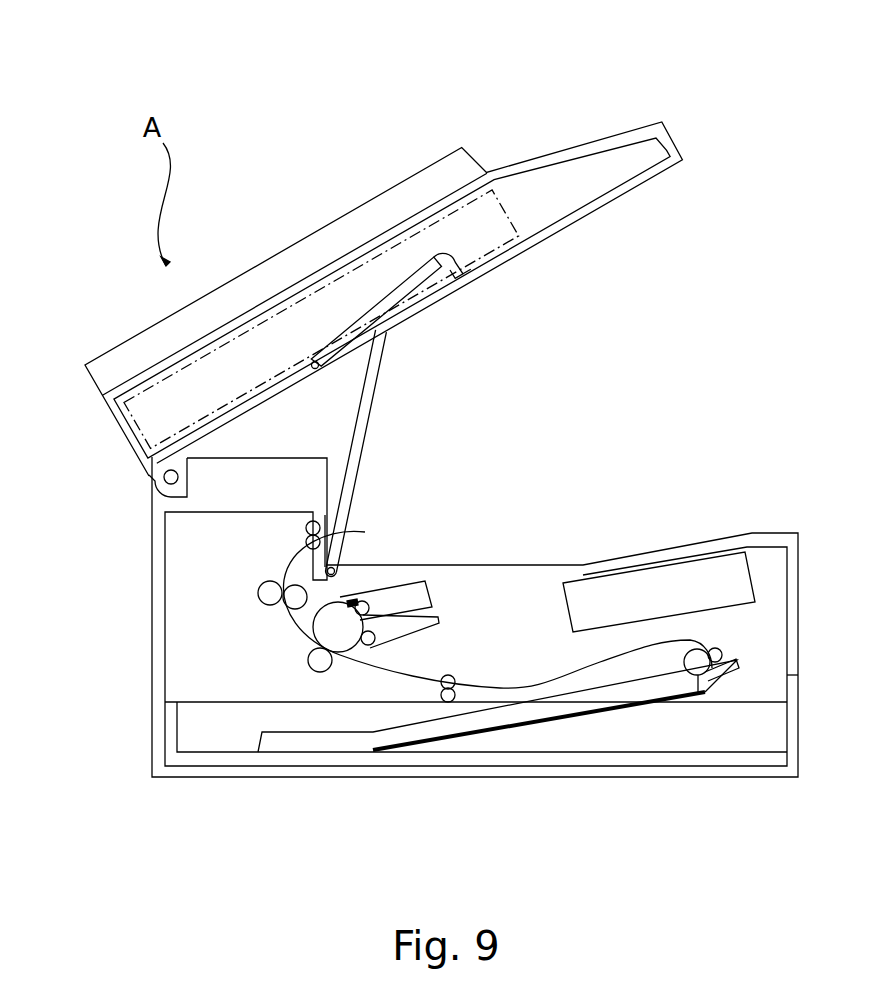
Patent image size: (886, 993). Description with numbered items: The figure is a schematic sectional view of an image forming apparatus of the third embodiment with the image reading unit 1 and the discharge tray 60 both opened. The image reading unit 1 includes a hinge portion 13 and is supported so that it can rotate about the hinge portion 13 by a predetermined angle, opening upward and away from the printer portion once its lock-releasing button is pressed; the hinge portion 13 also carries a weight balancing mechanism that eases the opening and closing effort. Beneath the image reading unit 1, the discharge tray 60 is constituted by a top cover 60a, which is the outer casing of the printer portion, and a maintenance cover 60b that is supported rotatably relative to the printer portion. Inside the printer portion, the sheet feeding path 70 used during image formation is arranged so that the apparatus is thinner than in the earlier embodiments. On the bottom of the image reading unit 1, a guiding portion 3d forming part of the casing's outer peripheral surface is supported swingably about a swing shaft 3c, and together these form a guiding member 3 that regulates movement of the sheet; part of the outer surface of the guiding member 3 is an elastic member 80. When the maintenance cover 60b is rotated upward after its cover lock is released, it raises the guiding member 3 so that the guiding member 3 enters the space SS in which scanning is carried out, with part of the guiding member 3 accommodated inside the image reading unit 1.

The image reading unit 1 is at (584, 138).
The guiding member 3 is at (317, 163).
The swing shaft 3c is at (315, 362).
The guiding portion 3d is at (393, 293).
The elastic member 80 is at (417, 268).
The space SS is at (152, 387).
The hinge portion 13 is at (164, 477).
The discharge tray 60 is at (525, 407).
The top cover 60a is at (427, 560).
The maintenance cover 60b is at (367, 425).
The sheet feeding path 70 is at (658, 643).